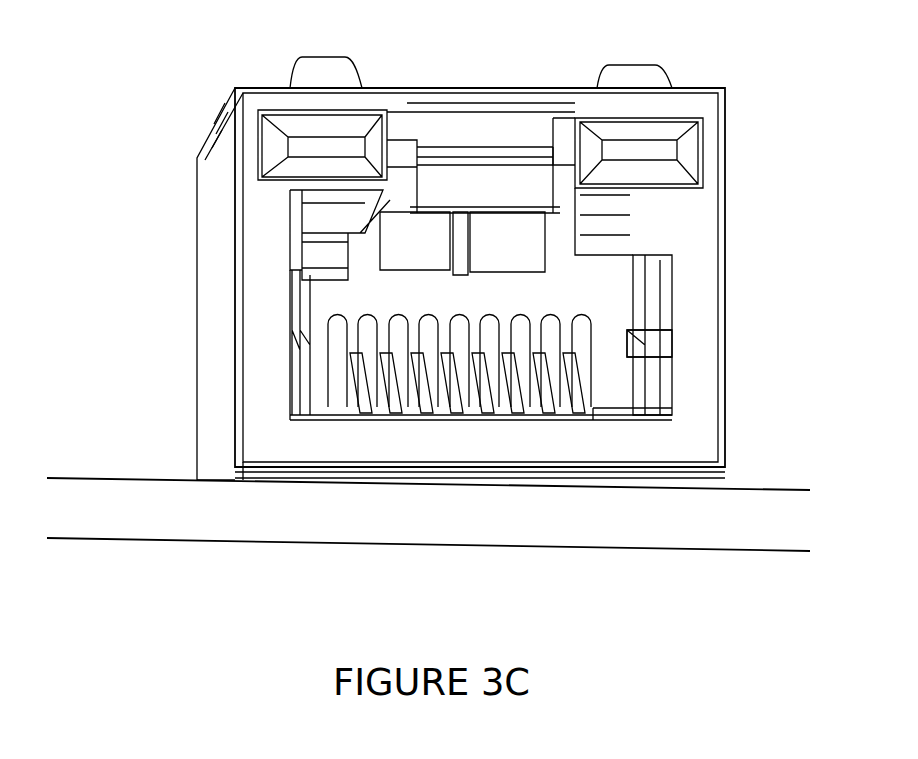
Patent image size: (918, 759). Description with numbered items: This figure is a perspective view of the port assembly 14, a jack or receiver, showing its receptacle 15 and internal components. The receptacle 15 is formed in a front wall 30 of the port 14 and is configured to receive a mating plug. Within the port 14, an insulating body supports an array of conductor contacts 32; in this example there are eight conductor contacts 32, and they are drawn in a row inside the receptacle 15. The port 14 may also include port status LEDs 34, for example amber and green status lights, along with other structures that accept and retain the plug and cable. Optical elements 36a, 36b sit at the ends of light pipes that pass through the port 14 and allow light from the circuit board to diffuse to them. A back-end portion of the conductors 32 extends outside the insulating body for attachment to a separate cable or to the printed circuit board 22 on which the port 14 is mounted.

The port assembly 14 is at (212, 240).
The receptacle 15 is at (635, 333).
The printed circuit board 22 is at (150, 541).
The front wall 30 is at (698, 270).
The conductor contacts 32 is at (590, 392).
The port status LEDs 34 is at (303, 140).
The optical element 36a is at (432, 273).
The optical element 36b is at (528, 273).